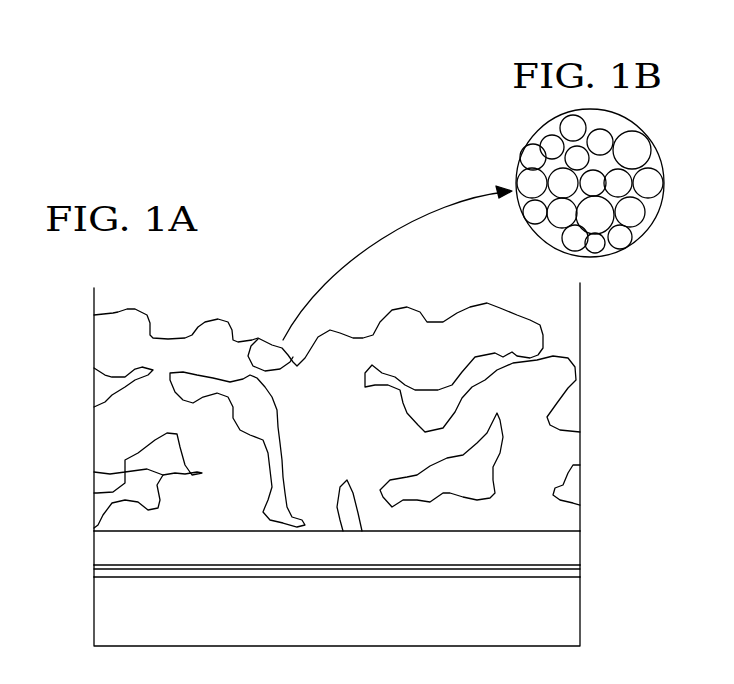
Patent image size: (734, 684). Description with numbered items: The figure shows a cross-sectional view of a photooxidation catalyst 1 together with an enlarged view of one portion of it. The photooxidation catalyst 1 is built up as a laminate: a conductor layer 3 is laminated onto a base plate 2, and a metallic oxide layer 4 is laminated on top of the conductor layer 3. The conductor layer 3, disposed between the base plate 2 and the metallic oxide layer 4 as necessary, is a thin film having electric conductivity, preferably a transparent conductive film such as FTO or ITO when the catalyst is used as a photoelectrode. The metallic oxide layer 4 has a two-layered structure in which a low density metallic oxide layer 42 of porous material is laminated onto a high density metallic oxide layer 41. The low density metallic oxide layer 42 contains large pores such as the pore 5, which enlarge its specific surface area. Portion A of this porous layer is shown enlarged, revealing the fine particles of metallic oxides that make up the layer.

The photooxidation catalyst 1 is at (367, 465).
The base plate 2 is at (385, 612).
The conductor layer 3 is at (582, 568).
The metallic oxide layer 4 is at (346, 425).
The high density metallic oxide layer 41 is at (363, 549).
The low density metallic oxide layer 42 is at (328, 407).
The pore 5 is at (94, 470).
The portion A is at (273, 337).